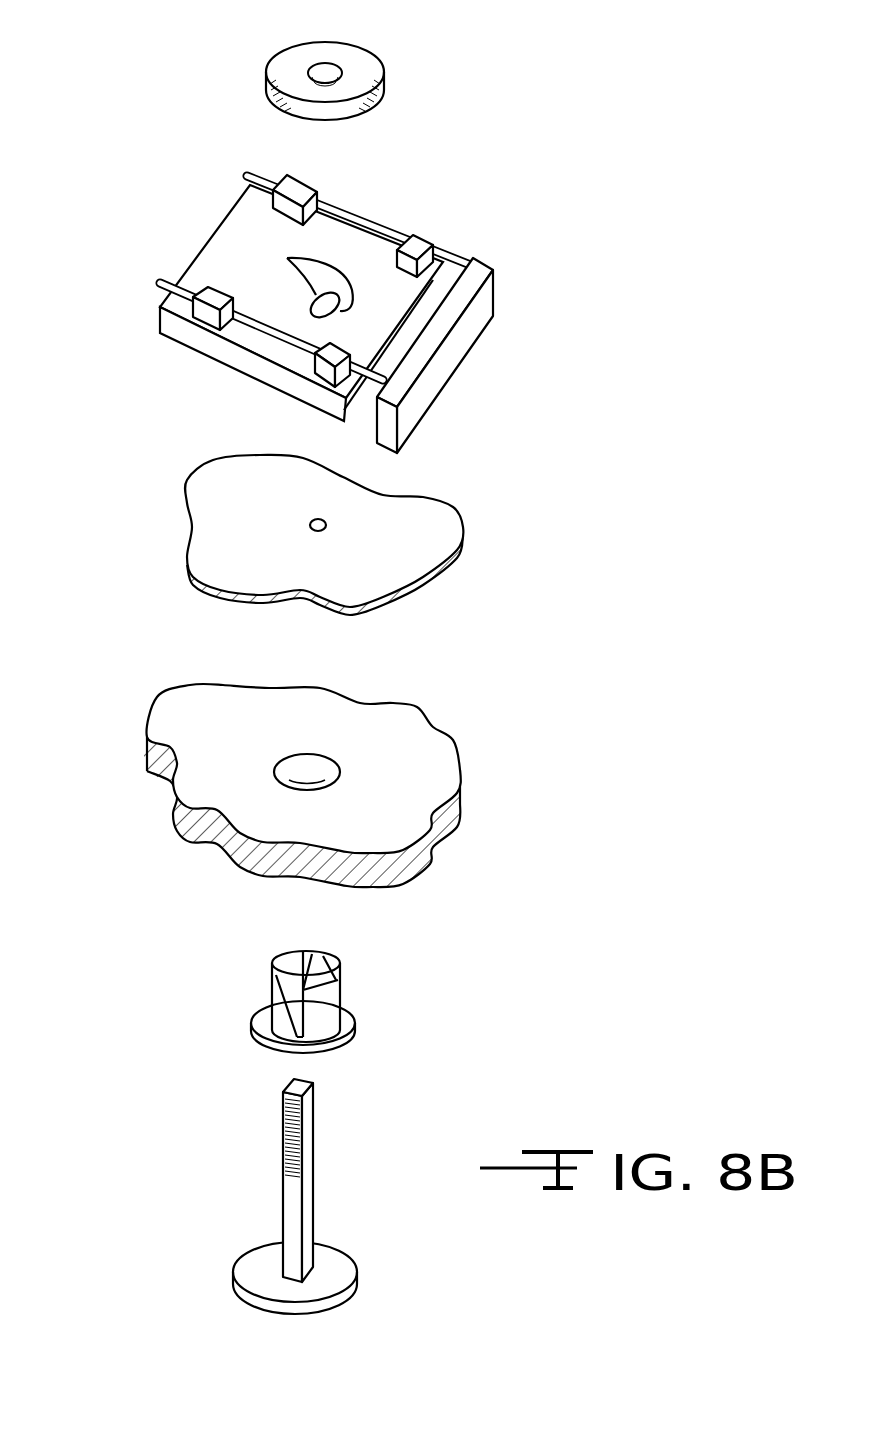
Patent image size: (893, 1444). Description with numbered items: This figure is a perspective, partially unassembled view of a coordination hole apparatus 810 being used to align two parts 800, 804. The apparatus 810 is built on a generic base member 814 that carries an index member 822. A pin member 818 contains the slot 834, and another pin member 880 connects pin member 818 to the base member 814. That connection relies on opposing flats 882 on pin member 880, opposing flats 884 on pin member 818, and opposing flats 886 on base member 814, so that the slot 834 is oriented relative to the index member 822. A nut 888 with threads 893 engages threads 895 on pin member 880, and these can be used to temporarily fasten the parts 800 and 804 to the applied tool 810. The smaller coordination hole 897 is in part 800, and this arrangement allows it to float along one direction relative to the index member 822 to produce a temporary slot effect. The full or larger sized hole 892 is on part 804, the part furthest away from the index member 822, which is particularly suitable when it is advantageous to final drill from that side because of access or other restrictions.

The part 800 is at (381, 535).
The part 804 is at (360, 785).
The coordination hole apparatus 810 is at (311, 296).
The base member 814 is at (363, 214).
The pin member 818 is at (273, 976).
The index member 822 is at (462, 348).
The slot 834 is at (295, 970).
The pin member 880 is at (285, 1196).
The opposing flats 882 is at (307, 1180).
The opposing flats 884 is at (305, 989).
The opposing flats 886 is at (287, 258).
The nut 888 is at (376, 82).
The hole 892 is at (283, 758).
The threads 893 is at (342, 75).
The threads 895 is at (283, 1113).
The coordination hole 897 is at (311, 520).